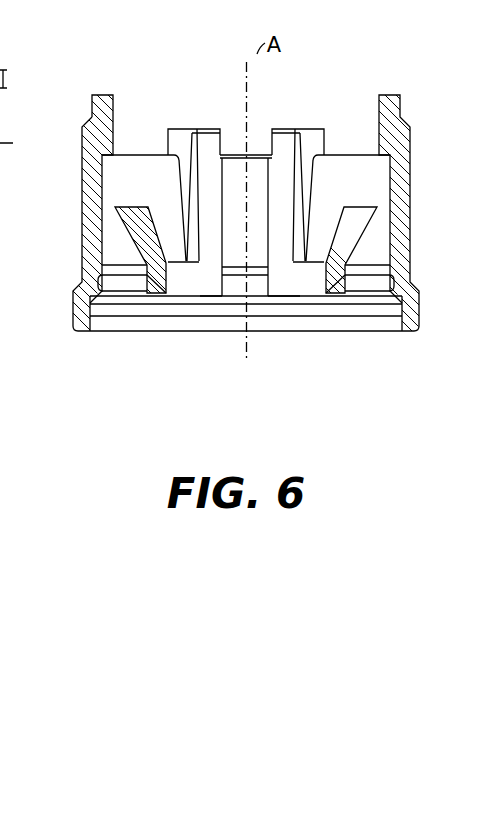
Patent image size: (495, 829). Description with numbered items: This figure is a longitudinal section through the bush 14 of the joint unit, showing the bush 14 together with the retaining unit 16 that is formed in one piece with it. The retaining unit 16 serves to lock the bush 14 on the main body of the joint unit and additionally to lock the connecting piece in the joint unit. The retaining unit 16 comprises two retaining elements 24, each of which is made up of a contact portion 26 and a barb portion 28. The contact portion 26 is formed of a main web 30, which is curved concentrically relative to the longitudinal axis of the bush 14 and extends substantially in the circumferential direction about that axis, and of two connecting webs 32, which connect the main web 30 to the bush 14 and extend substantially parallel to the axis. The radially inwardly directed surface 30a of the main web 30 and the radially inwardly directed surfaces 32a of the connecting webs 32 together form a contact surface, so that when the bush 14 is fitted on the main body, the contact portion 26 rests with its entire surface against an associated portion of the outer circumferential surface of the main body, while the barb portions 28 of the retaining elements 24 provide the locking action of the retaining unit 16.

The bush 14 is at (410, 182).
The retaining unit 16 is at (333, 268).
The retaining element 24 is at (196, 283).
The contact portion 26 is at (203, 193).
The barb portion 28 is at (140, 243).
The main web 30 is at (210, 281).
The radially inwardly directed surface of the main web 30a is at (185, 281).
The connecting web 32 is at (205, 203).
The radially inwardly directed surface of the connecting web 32a is at (213, 165).